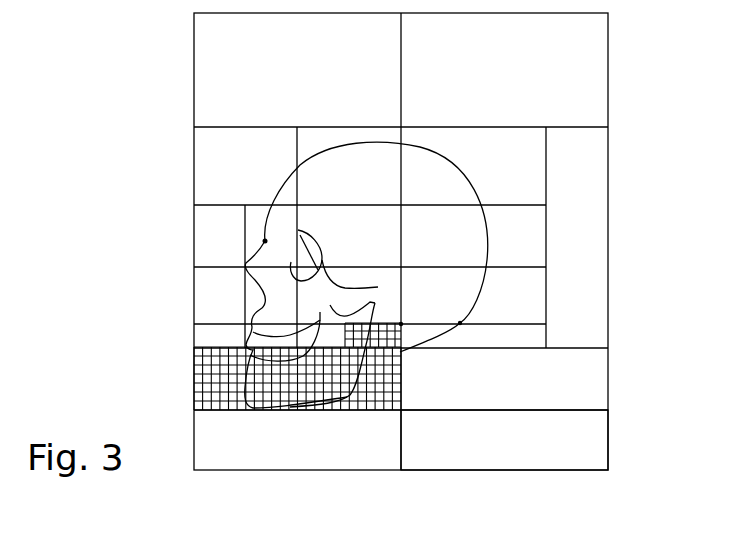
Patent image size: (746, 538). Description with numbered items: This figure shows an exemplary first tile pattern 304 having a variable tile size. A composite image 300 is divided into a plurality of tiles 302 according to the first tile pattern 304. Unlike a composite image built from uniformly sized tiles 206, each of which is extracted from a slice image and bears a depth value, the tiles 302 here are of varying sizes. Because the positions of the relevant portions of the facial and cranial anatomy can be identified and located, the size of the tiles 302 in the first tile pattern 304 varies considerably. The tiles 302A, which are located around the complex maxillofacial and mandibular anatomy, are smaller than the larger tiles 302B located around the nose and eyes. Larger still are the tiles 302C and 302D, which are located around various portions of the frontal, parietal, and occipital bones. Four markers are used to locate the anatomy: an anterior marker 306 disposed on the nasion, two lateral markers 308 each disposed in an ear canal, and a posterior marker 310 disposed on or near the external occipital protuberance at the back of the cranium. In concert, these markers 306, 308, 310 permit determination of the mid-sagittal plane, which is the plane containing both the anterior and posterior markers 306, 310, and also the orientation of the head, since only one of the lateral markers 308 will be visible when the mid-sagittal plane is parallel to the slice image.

The composite image 300 is at (653, 88).
The tiles 302 is at (540, 420).
The tiles 302A is at (196, 390).
The tiles 302B is at (266, 296).
The tiles 302C is at (210, 162).
The tiles 302D is at (524, 168).
The first tile pattern 304 is at (652, 405).
The anterior marker 306 is at (255, 237).
The lateral marker 308 is at (408, 332).
The posterior marker 310 is at (470, 328).
The tiles 206 is at (488, 240).